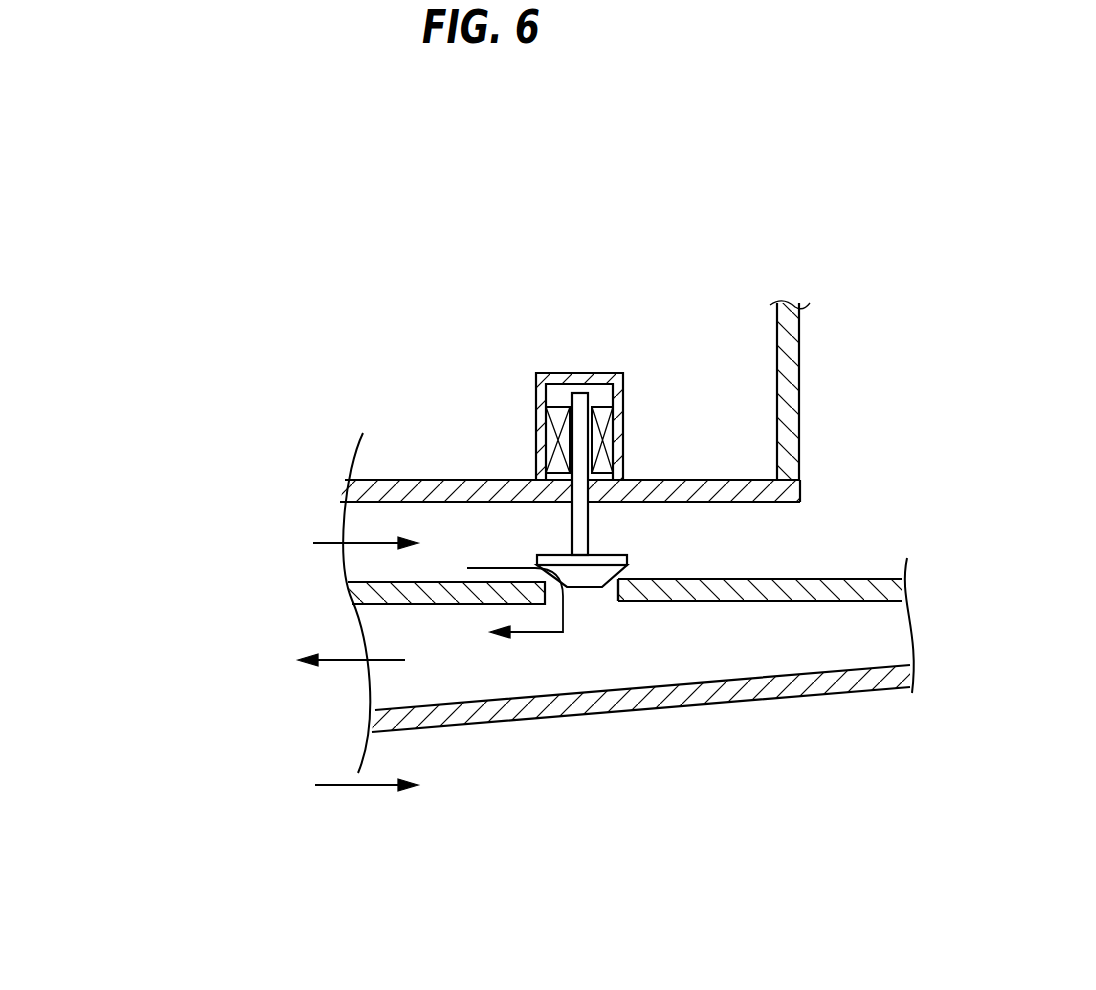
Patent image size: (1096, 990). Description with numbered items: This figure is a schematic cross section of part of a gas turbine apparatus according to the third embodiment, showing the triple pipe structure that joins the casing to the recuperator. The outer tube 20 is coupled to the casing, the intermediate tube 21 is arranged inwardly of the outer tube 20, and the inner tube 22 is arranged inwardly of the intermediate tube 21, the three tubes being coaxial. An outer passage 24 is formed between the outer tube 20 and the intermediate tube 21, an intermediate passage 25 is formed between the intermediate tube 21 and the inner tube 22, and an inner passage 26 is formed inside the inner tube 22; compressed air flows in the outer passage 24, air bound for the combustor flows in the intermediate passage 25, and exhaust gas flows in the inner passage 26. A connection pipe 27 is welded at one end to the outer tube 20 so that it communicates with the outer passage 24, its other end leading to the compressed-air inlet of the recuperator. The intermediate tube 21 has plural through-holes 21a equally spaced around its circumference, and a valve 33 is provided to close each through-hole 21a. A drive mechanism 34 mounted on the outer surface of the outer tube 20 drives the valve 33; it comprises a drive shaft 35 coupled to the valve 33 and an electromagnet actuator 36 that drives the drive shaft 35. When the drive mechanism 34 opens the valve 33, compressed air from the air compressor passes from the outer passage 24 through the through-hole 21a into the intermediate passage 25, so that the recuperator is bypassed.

The outer tube 20 is at (395, 478).
The intermediate tube 21 is at (743, 602).
The through-hole 21a is at (607, 603).
The inner tube 22 is at (542, 718).
The outer passage 24 is at (703, 517).
The intermediate passage 25 is at (678, 635).
The inner passage 26 is at (448, 762).
The connection pipe 27 is at (778, 340).
The valve 33 is at (552, 553).
The drive mechanism 34 is at (539, 373).
The drive shaft 35 is at (588, 527).
The actuator 36 is at (560, 417).